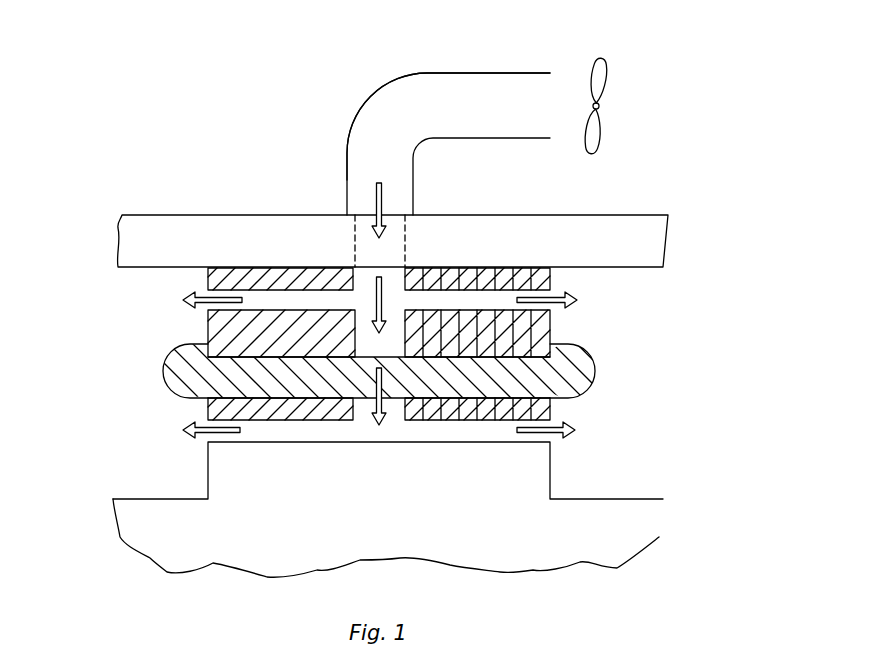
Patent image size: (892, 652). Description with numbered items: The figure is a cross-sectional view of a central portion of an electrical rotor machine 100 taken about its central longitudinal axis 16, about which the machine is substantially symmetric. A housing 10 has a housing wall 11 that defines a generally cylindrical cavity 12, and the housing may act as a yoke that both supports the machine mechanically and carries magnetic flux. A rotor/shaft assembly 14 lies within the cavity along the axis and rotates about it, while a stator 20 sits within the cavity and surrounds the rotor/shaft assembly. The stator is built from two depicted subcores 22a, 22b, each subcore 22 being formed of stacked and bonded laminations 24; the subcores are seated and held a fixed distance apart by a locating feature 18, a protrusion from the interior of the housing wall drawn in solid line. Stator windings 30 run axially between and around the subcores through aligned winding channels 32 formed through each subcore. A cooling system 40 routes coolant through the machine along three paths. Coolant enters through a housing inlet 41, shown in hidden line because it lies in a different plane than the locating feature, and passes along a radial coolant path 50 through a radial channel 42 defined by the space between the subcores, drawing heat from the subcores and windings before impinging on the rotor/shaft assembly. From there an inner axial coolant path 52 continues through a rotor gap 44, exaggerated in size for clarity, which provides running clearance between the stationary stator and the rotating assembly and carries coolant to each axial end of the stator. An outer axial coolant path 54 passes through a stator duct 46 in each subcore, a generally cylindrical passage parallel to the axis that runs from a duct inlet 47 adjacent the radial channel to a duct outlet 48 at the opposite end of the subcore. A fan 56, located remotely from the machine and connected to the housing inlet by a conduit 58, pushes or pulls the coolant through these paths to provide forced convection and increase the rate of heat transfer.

The electrical rotor machine 100 is at (195, 87).
The housing 10 is at (648, 215).
The housing wall 11 is at (535, 213).
The cavity 12 is at (590, 470).
The rotor/shaft assembly 14 is at (659, 537).
The central longitudinal axis 16 is at (660, 538).
The locating feature 18 is at (405, 280).
The stator 20 is at (147, 327).
The subcore 22 is at (555, 420).
The first subcore 22a is at (553, 400).
The second subcore 22b is at (208, 328).
The lamination 24 is at (527, 267).
The stator winding 30 is at (163, 372).
The winding channel 32 is at (208, 400).
The cooling system 40 is at (338, 207).
The housing inlet 41 is at (362, 213).
The radial channel 42 is at (368, 303).
The rotor gap 44 is at (193, 440).
The stator duct 46 is at (552, 276).
The duct inlet 47 is at (480, 283).
The duct outlet 48 is at (552, 305).
The radial coolant path 50 is at (389, 280).
The inner axial coolant path 52 is at (240, 435).
The outer axial coolant path 54 is at (228, 298).
The fan 56 is at (582, 75).
The conduit 58 is at (400, 74).